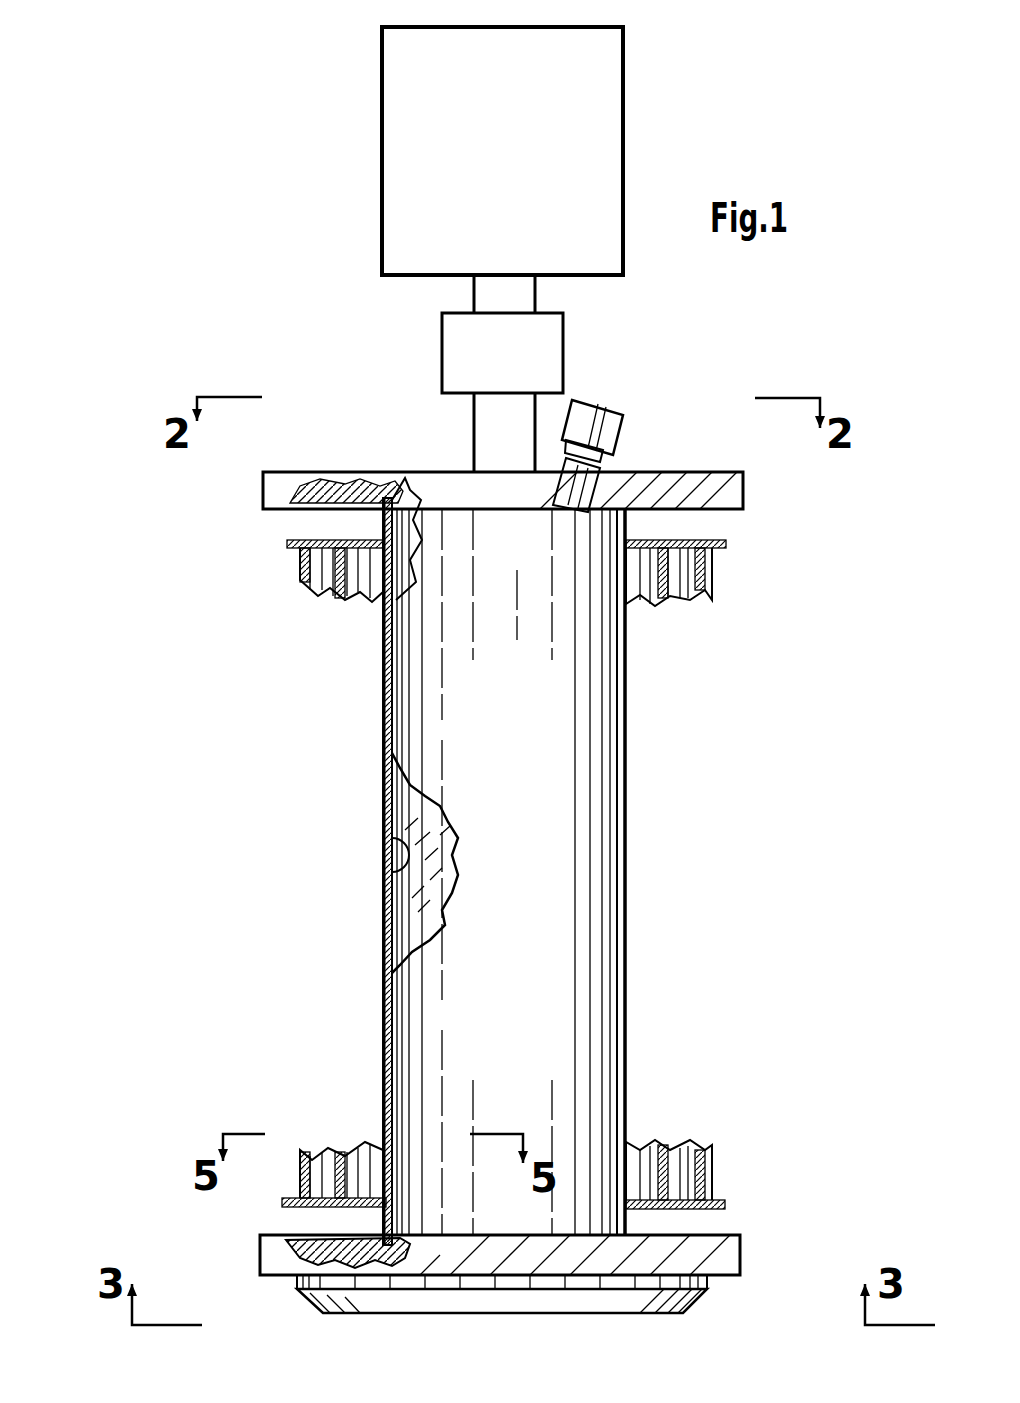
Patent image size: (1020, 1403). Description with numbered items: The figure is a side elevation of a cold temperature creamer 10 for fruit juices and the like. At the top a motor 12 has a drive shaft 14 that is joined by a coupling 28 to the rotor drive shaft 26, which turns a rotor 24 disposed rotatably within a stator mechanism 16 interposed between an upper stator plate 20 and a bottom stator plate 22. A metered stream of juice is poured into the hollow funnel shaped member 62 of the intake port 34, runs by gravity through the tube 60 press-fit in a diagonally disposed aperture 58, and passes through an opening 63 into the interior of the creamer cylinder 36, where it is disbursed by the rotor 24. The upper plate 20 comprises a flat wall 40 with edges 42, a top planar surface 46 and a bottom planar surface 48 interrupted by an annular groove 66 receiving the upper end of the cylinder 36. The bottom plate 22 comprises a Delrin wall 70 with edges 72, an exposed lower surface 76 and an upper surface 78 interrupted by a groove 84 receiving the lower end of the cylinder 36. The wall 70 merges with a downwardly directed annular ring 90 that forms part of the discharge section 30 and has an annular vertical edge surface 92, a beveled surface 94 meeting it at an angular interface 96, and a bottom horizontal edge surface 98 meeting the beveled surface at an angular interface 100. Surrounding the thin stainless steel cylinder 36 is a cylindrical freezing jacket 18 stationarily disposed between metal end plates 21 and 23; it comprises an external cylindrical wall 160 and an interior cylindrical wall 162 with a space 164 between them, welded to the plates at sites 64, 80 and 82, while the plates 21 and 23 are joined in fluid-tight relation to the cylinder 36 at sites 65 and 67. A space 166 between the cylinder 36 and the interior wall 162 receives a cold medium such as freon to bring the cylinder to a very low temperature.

The creamer 10 is at (318, 278).
The motor 12 is at (402, 138).
The drive shaft 14 is at (474, 295).
The stator mechanism 16 is at (364, 462).
The cylindrical freezing jacket 18 is at (277, 604).
The upper stator plate 20 is at (487, 460).
The end plate 21 is at (728, 543).
The bottom stator plate 22 is at (484, 1275).
The end plate 23 is at (728, 1200).
The rotor 24 is at (411, 855).
The drive shaft 26 is at (474, 418).
The coupling 28 is at (442, 352).
The discharge section 30 is at (538, 1336).
The intake port 34 is at (456, 452).
The creamer cylinder 36 is at (388, 575).
The flat wall 40 is at (706, 470).
The edges 42 is at (263, 488).
The top planar surface 46 is at (288, 470).
The bottom planar surface 48 is at (296, 506).
The diagonally disposed aperture 58 is at (565, 520).
The tube 60 is at (558, 512).
The funnel shaped member 62 is at (602, 445).
The opening 63 is at (560, 505).
The welding site 64 is at (322, 540).
The connection site 65 is at (380, 544).
The annular groove 66 is at (416, 520).
The connection site 67 is at (380, 1208).
The wall 70 is at (544, 1269).
The edges 72 is at (260, 1252).
The exposed lower surface 76 is at (274, 1276).
The upper surface 78 is at (735, 1234).
The welding site 80 is at (334, 1154).
The welding site 82 is at (362, 1145).
The groove 84 is at (410, 1186).
The annular ring 90 is at (645, 1316).
The annular vertical edge surface 92 is at (300, 1282).
The beveled surface 94 is at (312, 1300).
The angular interface 96 is at (450, 1272).
The bottom horizontal edge surface 98 is at (620, 1314).
The angular interface 100 is at (684, 1313).
The external cylindrical wall 160 is at (302, 575).
The interior cylindrical wall 162 is at (355, 592).
The space 164 is at (330, 586).
The space 166 is at (375, 598).